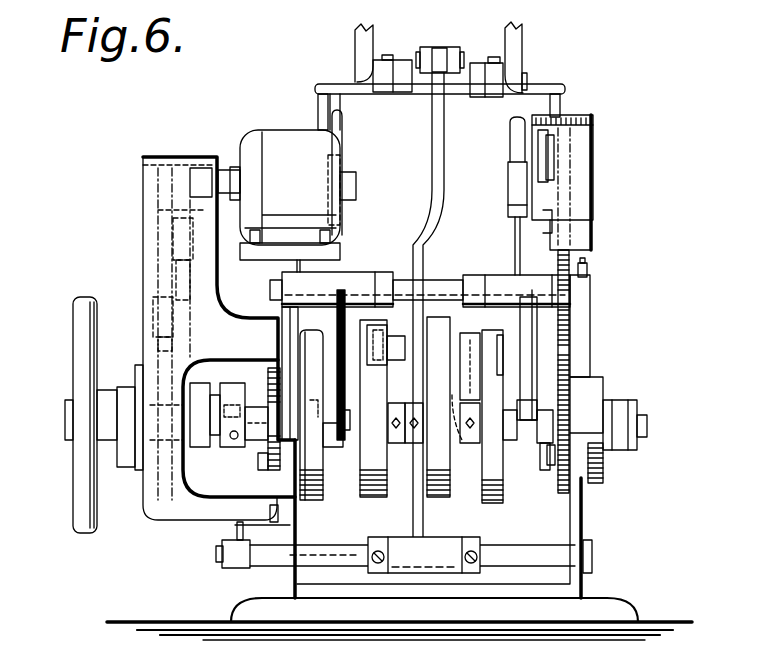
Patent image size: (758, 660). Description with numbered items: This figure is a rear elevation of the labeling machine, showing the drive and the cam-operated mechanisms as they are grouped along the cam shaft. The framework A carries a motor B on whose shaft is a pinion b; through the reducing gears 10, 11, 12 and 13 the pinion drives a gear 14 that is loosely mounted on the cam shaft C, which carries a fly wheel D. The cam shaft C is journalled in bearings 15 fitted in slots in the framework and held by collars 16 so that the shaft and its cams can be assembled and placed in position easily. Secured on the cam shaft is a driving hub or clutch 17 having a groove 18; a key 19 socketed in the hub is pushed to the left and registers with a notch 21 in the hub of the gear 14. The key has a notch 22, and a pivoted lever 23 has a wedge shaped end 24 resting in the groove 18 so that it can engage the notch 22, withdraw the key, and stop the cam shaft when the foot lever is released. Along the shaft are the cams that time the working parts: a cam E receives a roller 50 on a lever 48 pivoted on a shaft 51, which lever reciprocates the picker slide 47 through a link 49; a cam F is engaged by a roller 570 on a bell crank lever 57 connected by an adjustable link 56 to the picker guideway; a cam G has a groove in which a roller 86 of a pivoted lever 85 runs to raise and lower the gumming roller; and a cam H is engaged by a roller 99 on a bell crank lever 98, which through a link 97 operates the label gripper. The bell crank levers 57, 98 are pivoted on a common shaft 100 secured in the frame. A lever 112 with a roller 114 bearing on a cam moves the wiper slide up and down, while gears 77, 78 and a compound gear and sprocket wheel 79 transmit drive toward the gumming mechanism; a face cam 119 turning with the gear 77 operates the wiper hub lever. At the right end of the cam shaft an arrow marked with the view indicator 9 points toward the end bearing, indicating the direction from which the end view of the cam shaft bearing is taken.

The framework A is at (262, 596).
The motor B is at (280, 128).
The cam shaft C is at (65, 415).
The fly wheel D is at (73, 478).
The cam E is at (438, 427).
The cam F is at (548, 480).
The cam G is at (373, 425).
The cam H is at (311, 435).
The pinion b is at (190, 180).
The direction of view arrow 9 is at (640, 389).
The reducing gear 10 is at (158, 210).
The reducing gear 11 is at (173, 233).
The reducing gear 12 is at (176, 270).
The reducing gear 13 is at (153, 312).
The gear 14 is at (158, 347).
The bearings 15 is at (650, 460).
The collars 16 is at (268, 462).
The driving hub 17 is at (258, 360).
The groove 18 is at (208, 450).
The key 19 is at (183, 445).
The notch 21 is at (188, 417).
The notch 22 is at (230, 440).
The pivoted lever 23 is at (237, 383).
The wedge shaped end 24 is at (213, 398).
The slide 47 is at (404, 84).
The lever 48 is at (432, 158).
The link 49 is at (440, 50).
The roller 50 is at (440, 445).
The shaft 51 is at (498, 560).
The link 56 is at (512, 245).
The bell crank lever 57 is at (528, 372).
The roller 570 is at (540, 450).
The gear 77 is at (569, 330).
The gear 78 is at (560, 228).
The compound gear and sprocket wheel 79 is at (565, 160).
The pivoted lever 85 is at (400, 338).
The roller 86 is at (405, 409).
The link 97 is at (342, 128).
The bell crank lever 98 is at (345, 345).
The roller 99 is at (320, 405).
The common shaft 100 is at (445, 292).
The lever 112 is at (472, 356).
The roller 114 is at (505, 328).
The cam 119 is at (569, 353).